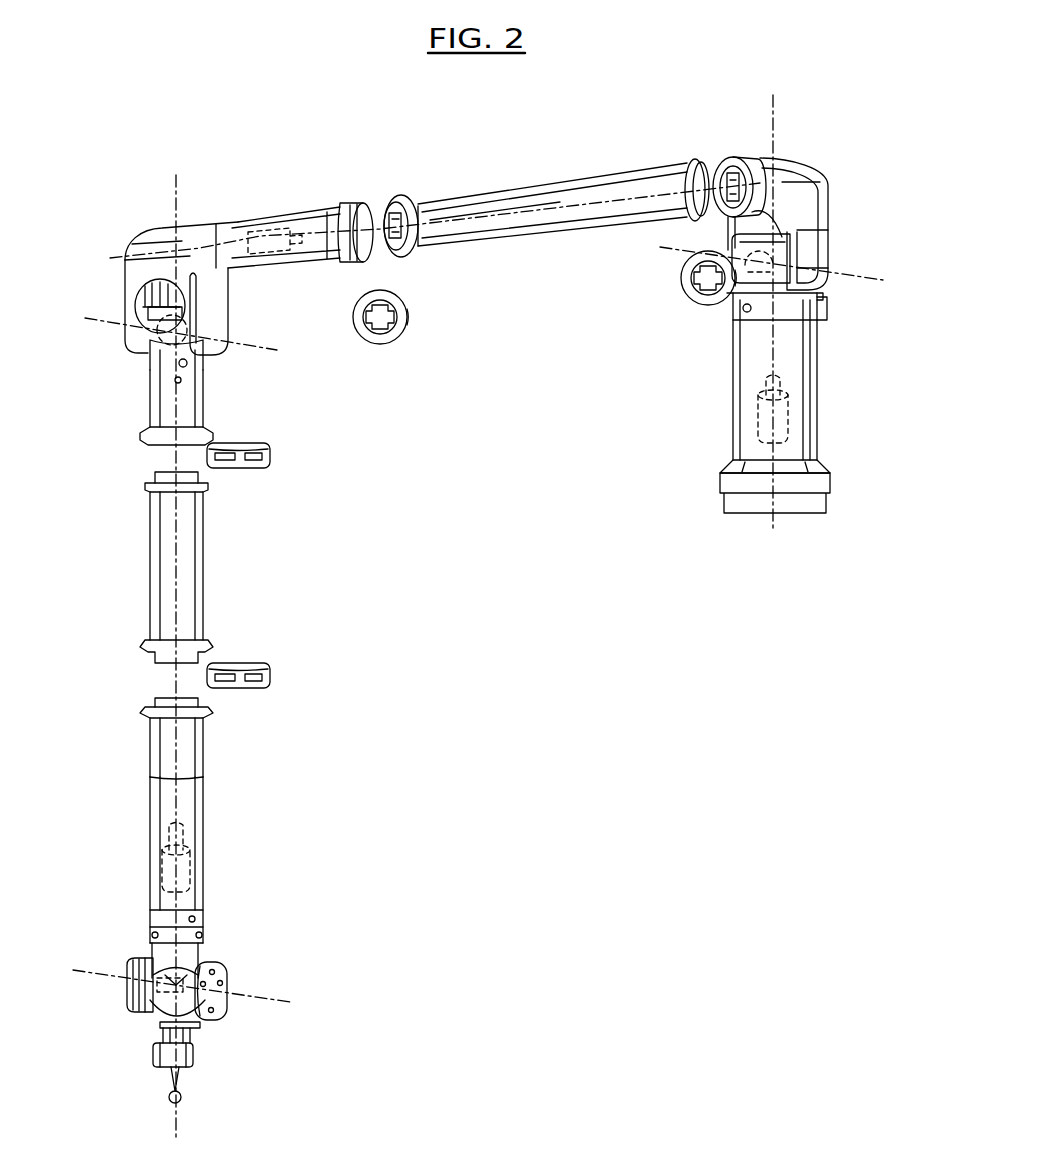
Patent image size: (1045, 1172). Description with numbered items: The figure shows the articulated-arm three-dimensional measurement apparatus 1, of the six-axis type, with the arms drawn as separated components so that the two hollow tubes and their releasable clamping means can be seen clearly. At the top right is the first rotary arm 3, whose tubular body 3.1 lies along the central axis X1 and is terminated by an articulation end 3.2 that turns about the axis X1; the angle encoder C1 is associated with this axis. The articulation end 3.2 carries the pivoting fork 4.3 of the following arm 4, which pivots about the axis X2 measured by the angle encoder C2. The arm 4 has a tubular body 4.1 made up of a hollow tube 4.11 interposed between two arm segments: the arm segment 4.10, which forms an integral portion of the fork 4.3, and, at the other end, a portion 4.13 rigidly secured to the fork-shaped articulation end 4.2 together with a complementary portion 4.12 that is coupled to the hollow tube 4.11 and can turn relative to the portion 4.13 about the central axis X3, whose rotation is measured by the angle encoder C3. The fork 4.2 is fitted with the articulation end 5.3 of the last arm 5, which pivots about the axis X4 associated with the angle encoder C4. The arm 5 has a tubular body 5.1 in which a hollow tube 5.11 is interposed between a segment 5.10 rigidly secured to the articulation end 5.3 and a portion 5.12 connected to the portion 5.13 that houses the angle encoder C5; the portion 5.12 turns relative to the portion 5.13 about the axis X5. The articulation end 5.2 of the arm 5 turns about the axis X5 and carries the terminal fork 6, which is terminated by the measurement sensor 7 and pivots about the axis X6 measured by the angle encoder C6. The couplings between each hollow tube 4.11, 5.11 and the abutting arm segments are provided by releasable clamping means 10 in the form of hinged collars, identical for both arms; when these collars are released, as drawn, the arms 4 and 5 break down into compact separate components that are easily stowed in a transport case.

The measurement apparatus 1 is at (837, 347).
The first rotary arm 3 is at (832, 415).
The tubular body 3.1 is at (800, 357).
The articulation end 3.2 is at (780, 234).
The articulated arm 4 is at (475, 180).
The tubular body 4.1 is at (573, 180).
The articulation end 4.2 is at (160, 240).
The pivoting fork 4.3 is at (828, 195).
The arm segment 4.10 is at (762, 157).
The hollow tube 4.11 is at (537, 222).
The complementary portion 4.12 is at (333, 217).
The arm segment portion 4.13 is at (260, 222).
The articulated arm 5 is at (127, 615).
The tubular body 5.1 is at (148, 567).
The articulation end 5.2 is at (127, 993).
The articulation end 5.3 is at (128, 337).
The arm segment 5.10 is at (195, 403).
The hollow tube 5.11 is at (190, 580).
The arm portion 5.12 is at (193, 740).
The arm portion 5.13 is at (203, 832).
The terminal fork 6 is at (183, 1033).
The measurement sensor 7 is at (182, 1095).
The releasable clamping means 10 is at (692, 297).
The angle encoder C1 is at (757, 413).
The angle encoder C2 is at (737, 293).
The angle encoder C3 is at (273, 253).
The angle encoder C4 is at (138, 297).
The angle encoder C5 is at (163, 867).
The angle encoder C6 is at (153, 1015).
The central axis X1 is at (777, 107).
The pivot axis X2 is at (845, 276).
The central axis X3 is at (110, 260).
The pivot axis X4 is at (257, 348).
The central axis X5 is at (177, 1132).
The pivot axis X6 is at (267, 998).